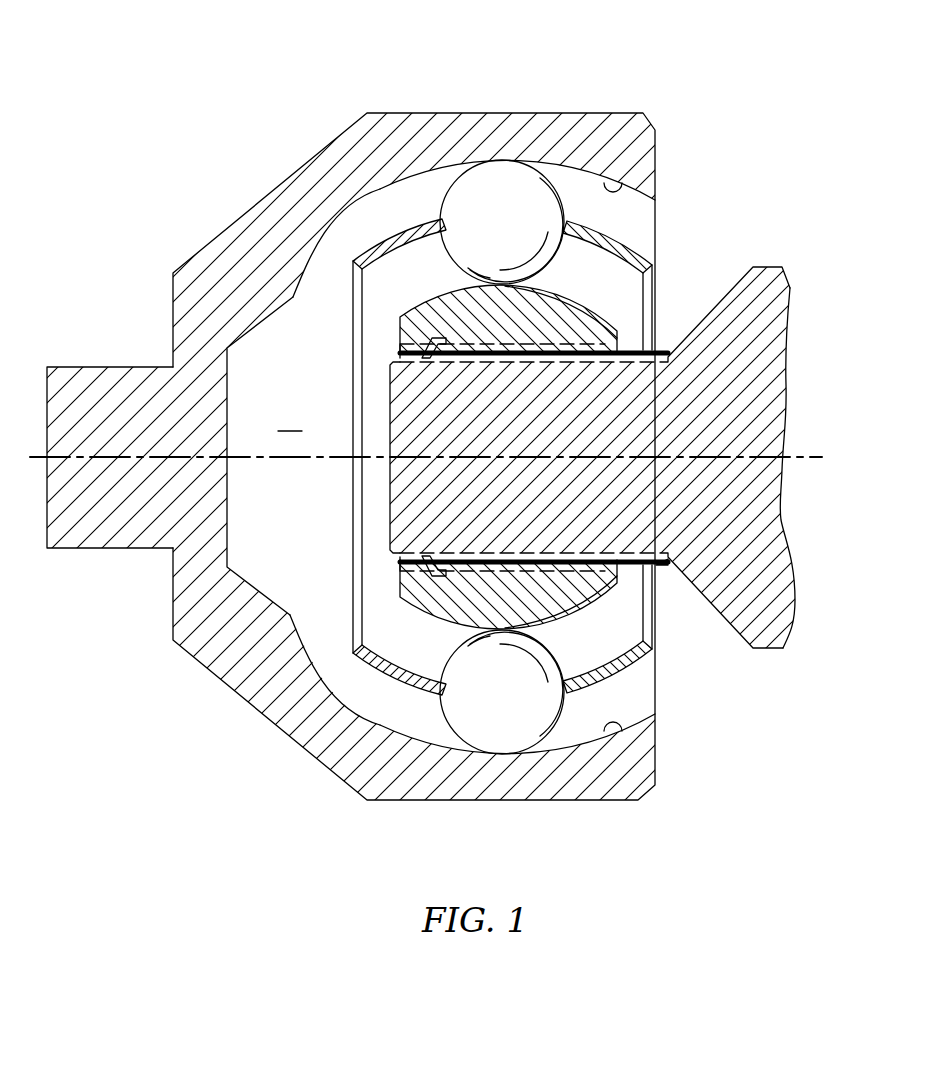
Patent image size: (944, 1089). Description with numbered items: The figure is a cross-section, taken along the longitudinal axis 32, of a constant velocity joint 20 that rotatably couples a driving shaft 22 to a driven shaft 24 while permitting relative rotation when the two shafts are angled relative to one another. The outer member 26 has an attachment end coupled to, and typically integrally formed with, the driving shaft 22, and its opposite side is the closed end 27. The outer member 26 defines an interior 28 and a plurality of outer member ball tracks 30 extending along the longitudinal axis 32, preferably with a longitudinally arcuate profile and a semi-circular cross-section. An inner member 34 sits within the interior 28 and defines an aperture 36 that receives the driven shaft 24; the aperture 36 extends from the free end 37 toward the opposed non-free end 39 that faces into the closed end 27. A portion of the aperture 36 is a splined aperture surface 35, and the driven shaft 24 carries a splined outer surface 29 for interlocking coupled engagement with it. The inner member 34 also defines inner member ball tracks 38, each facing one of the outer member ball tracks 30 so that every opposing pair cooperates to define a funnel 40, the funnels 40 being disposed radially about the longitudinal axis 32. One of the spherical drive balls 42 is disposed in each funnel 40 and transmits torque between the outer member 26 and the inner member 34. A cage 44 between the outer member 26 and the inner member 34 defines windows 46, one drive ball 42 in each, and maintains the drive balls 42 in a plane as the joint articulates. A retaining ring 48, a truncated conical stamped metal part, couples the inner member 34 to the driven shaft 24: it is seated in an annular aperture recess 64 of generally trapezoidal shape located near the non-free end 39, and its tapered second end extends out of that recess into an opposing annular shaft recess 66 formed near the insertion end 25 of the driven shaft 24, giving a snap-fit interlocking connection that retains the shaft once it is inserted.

The constant velocity joint 20 is at (243, 78).
The driving shaft 22 is at (113, 367).
The driven shaft 24 is at (782, 265).
The insertion end 25 is at (390, 463).
The outer member 26 is at (403, 110).
The closed end 27 is at (228, 530).
The interior 28 is at (328, 457).
The splined outer surface 29 is at (652, 563).
The outer member ball tracks 30 is at (645, 172).
The longitudinal axis 32 is at (797, 455).
The inner member 34 is at (612, 597).
The splined aperture surface 35 is at (490, 551).
The aperture 36 is at (640, 350).
The free end 37 is at (650, 567).
The inner member ball tracks 38 is at (648, 657).
The non-free end 39 is at (400, 560).
The funnel 40 is at (575, 271).
The drive balls 42 is at (518, 200).
The cage 44 is at (378, 244).
The windows 46 is at (555, 698).
The retaining ring 48 is at (440, 550).
The annular aperture recess 64 is at (437, 338).
The annular shaft recess 66 is at (400, 357).